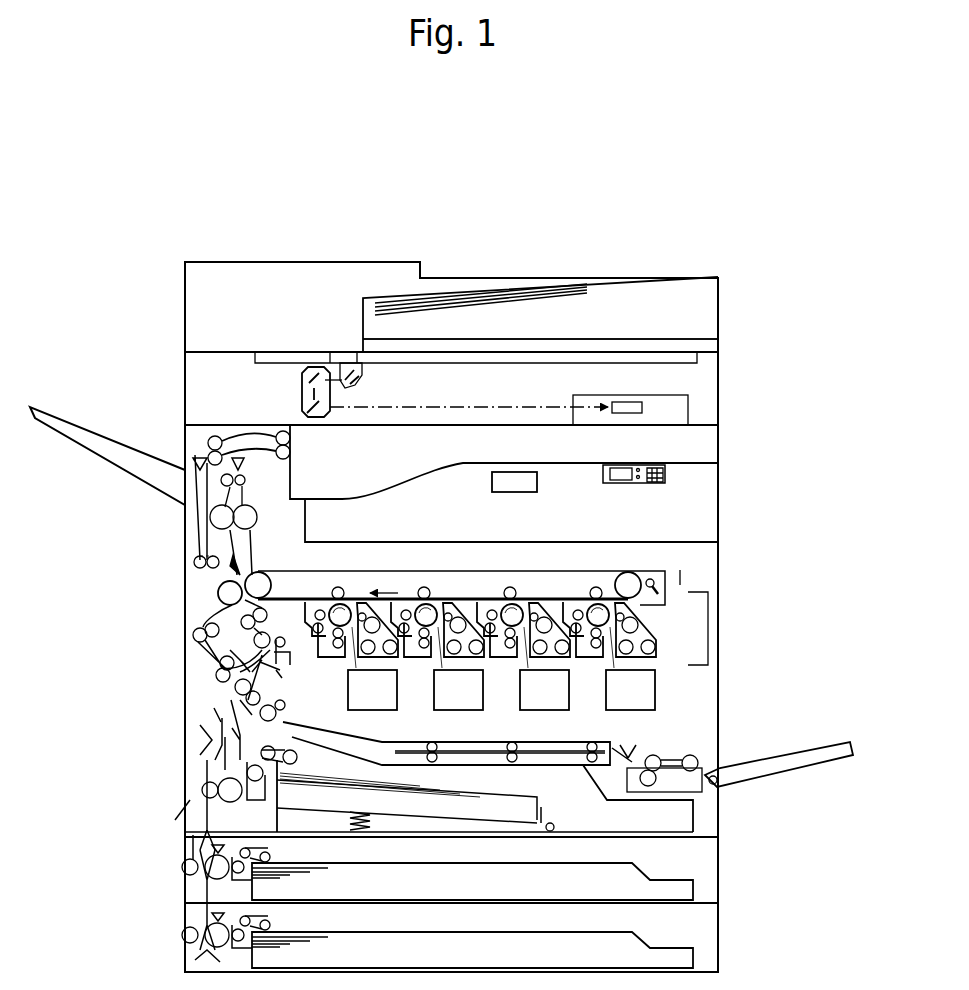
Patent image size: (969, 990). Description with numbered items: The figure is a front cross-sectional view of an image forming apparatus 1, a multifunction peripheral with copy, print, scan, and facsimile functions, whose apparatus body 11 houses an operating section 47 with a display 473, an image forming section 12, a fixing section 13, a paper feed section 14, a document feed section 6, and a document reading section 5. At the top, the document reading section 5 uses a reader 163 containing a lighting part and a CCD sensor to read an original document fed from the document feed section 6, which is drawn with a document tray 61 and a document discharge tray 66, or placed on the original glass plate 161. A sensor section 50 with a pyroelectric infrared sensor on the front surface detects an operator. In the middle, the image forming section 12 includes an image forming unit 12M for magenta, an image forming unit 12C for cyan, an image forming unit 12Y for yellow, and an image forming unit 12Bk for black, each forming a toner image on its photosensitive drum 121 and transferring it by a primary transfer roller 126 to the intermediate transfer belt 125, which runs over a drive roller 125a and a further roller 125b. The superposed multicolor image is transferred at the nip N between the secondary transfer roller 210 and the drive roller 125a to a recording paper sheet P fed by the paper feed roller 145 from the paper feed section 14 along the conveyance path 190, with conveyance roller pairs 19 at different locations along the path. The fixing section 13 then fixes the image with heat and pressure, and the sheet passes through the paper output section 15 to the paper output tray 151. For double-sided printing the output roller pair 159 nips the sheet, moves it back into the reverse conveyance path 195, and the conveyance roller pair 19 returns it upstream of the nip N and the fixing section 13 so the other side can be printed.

The image forming apparatus 1 is at (797, 332).
The document reading section 5 is at (405, 357).
The document feed section 6 is at (540, 271).
The document tray 61 is at (628, 283).
The document discharge tray 66 is at (635, 338).
The original glass plate 161 is at (590, 355).
The reader 163 is at (292, 397).
The apparatus body 11 is at (723, 486).
The image forming section 12 is at (683, 604).
The image forming unit for yellow 12Y is at (429, 572).
The image forming unit for magenta 12M is at (609, 611).
The image forming unit for cyan 12C is at (520, 581).
The image forming unit for black 12Bk is at (352, 587).
The photosensitive drum 121 is at (601, 671).
The intermediate transfer belt 125 is at (476, 558).
The drive roller 125a is at (285, 556).
The drive roller 125b is at (641, 575).
The primary transfer roller 126 is at (586, 570).
The fixing section 13 is at (206, 518).
The nip N is at (196, 556).
The paper feed section 14 is at (698, 863).
The paper feed roller 145 is at (258, 920).
The paper output section 15 is at (669, 452).
The conveyance roller pair 19 is at (272, 656).
The operating section 47 is at (682, 472).
The display 473 is at (618, 467).
The sensor section 50 is at (508, 470).
The paper output tray 151 is at (327, 499).
The output roller pair 159 is at (291, 438).
The conveyance path 190 is at (196, 590).
The reverse conveyance path 195 is at (193, 567).
The secondary transfer roller 210 is at (200, 626).
The recording paper sheet P is at (528, 788).